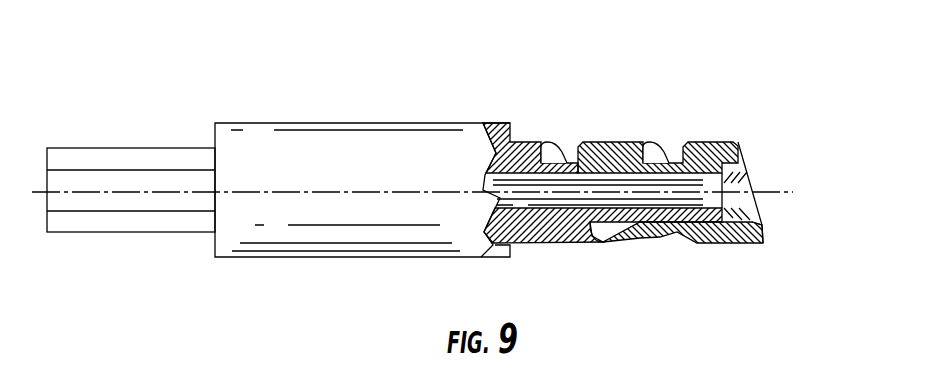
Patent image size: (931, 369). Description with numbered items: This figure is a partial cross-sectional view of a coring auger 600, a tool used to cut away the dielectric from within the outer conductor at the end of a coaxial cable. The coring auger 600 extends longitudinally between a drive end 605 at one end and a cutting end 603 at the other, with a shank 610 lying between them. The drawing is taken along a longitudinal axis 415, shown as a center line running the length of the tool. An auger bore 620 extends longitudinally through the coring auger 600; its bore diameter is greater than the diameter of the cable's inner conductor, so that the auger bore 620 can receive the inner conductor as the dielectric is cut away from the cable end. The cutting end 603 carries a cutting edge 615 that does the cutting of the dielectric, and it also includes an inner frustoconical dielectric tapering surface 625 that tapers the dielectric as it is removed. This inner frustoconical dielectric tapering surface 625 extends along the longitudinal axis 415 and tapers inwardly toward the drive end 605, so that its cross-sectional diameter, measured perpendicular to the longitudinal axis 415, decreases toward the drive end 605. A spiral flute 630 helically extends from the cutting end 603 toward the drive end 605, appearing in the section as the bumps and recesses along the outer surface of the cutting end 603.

The coring auger 600 is at (666, 44).
The drive end 605 is at (82, 157).
The shank 610 is at (288, 140).
The auger bore 620 is at (515, 183).
The spiral flute 630 is at (673, 147).
The cutting end 603 is at (736, 141).
The inner frustoconical dielectric tapering surface 625 is at (755, 165).
The longitudinal axis 415 is at (775, 190).
The cutting edge 615 is at (764, 219).